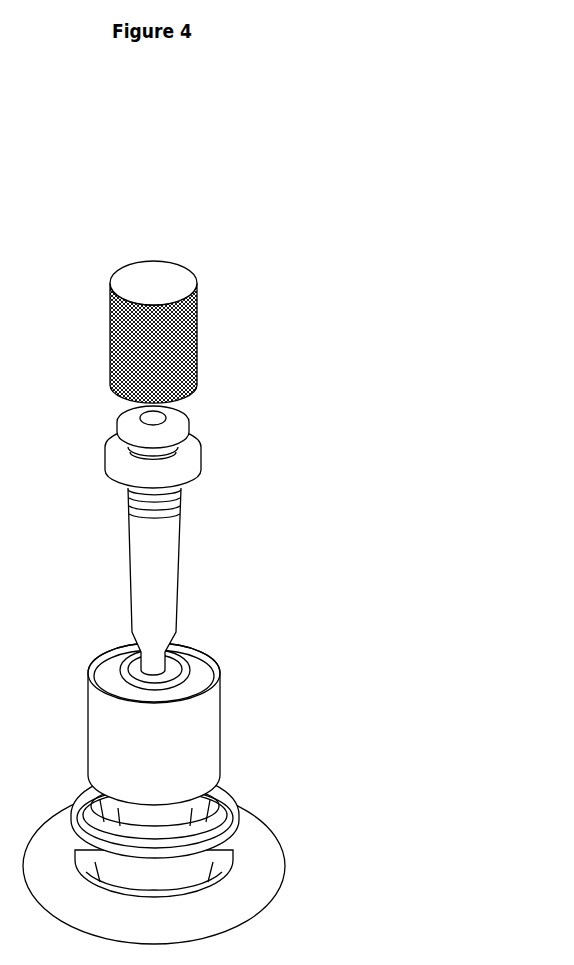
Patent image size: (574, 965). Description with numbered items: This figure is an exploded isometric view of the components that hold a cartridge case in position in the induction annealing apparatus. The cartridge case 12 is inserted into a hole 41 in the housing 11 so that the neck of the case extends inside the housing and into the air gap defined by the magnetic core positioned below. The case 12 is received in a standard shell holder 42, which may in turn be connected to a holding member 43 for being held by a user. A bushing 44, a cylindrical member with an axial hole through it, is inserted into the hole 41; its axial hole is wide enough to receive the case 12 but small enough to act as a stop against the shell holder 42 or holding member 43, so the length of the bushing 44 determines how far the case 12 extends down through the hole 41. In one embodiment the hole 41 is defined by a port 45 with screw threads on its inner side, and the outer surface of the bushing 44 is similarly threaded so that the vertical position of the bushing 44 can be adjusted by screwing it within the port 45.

The housing 11 is at (252, 895).
The hole 41 is at (158, 883).
The port 45 is at (238, 788).
The bushing 44 is at (200, 717).
The cartridge case 12 is at (172, 570).
The shell holder 42 is at (190, 451).
The holding member 43 is at (197, 327).